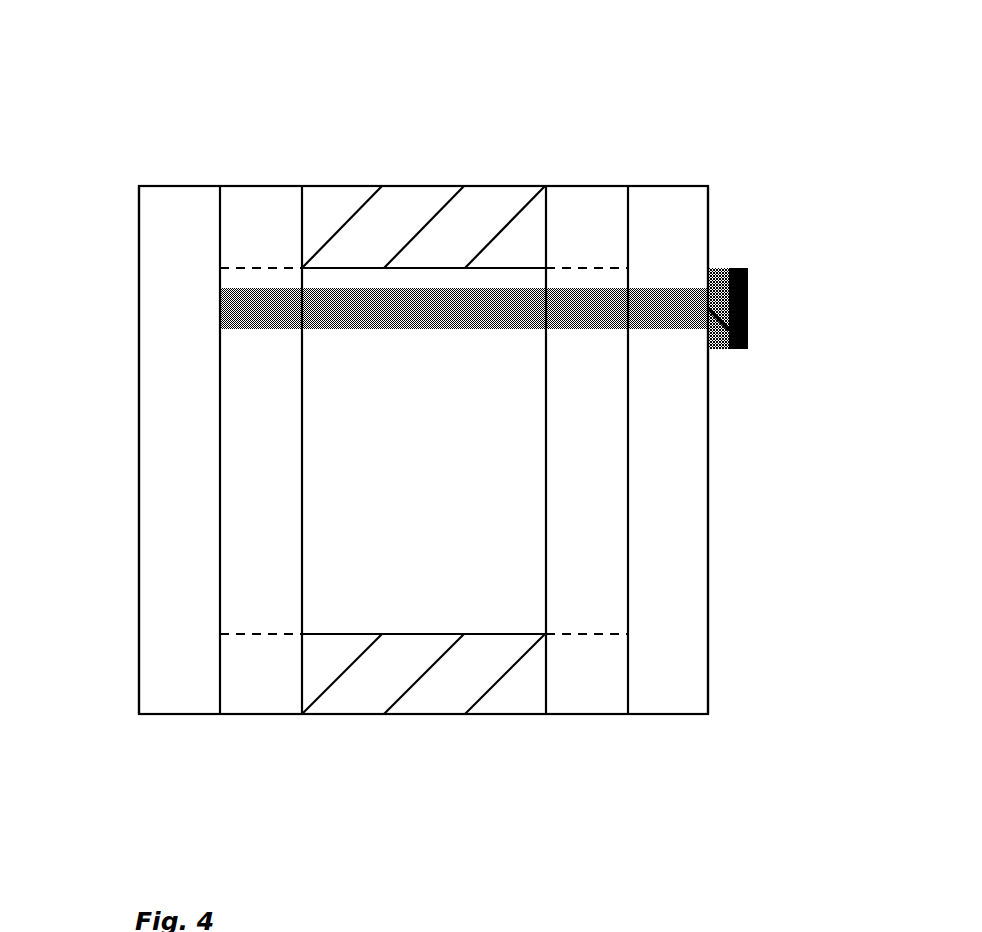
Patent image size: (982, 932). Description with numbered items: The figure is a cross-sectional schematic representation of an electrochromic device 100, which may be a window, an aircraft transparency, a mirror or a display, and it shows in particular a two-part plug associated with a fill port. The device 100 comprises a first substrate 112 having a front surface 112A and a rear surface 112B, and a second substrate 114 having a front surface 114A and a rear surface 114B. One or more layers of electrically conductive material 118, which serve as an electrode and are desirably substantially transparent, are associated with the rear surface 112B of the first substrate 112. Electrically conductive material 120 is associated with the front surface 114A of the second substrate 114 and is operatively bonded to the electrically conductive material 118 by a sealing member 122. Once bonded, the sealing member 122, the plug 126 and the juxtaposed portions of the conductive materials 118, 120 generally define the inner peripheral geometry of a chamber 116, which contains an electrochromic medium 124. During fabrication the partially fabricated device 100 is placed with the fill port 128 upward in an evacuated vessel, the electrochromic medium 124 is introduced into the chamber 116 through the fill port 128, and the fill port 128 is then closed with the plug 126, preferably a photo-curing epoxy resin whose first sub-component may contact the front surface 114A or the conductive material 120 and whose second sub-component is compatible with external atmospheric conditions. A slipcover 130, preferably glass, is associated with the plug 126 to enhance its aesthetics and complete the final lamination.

The electrochromic device 100 is at (468, 120).
The first substrate 112 is at (668, 722).
The front surface 112A is at (708, 503).
The rear surface 112B is at (628, 563).
The second substrate 114 is at (180, 722).
The front surface 114A is at (220, 350).
The rear surface 114B is at (139, 555).
The chamber 116 is at (445, 472).
The electrically conductive material 118 is at (586, 593).
The electrically conductive material 120 is at (261, 593).
The sealing member 122 is at (342, 205).
The electrochromic medium 124 is at (423, 552).
The plug 126 is at (443, 330).
The fill port 128 is at (748, 349).
The slipcover 130 is at (748, 309).